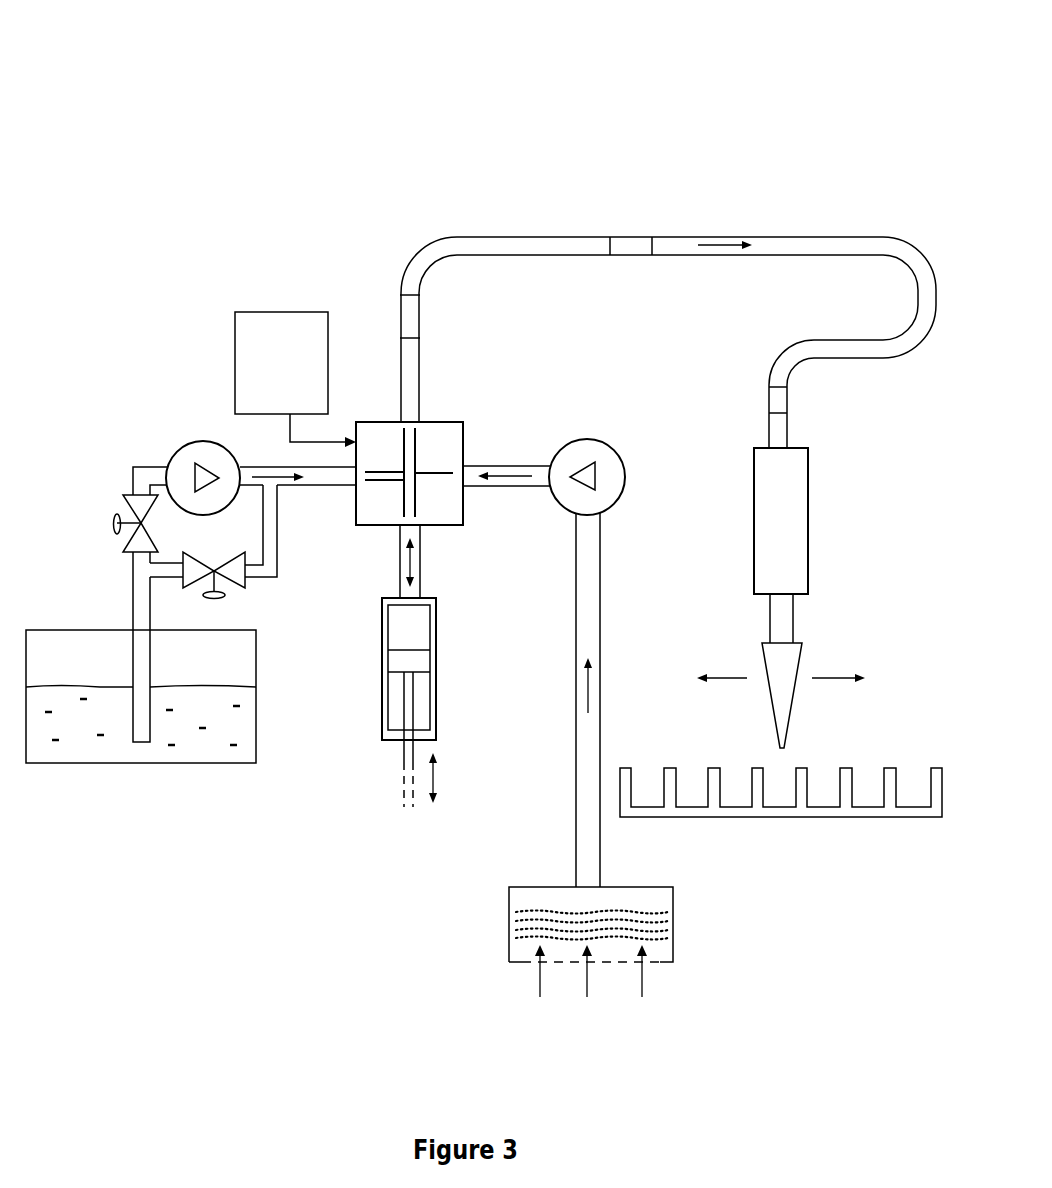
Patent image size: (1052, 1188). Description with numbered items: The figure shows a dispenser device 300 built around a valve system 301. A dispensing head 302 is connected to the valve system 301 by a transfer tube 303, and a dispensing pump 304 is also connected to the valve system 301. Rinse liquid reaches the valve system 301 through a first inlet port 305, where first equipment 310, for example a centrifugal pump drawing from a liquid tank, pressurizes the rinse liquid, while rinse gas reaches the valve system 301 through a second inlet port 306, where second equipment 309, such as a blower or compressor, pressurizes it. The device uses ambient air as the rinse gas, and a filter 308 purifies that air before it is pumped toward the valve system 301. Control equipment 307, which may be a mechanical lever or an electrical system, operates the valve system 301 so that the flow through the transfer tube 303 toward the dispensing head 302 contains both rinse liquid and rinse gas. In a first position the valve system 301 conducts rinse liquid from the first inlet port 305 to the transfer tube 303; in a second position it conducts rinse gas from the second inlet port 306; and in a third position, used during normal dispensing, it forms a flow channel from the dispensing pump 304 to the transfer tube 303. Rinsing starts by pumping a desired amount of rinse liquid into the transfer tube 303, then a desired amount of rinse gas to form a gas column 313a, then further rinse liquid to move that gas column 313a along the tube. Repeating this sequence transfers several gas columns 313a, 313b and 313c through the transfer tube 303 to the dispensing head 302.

The dispenser device 300 is at (246, 112).
The valve system 301 is at (437, 422).
The dispensing head 302 is at (808, 536).
The transfer tube 303 is at (813, 237).
The dispensing pump 304 is at (436, 662).
The first inlet port 305 is at (345, 488).
The second inlet port 306 is at (472, 487).
The control equipment 307 is at (295, 379).
The filter 308 is at (509, 910).
The second equipment 309 is at (627, 477).
The first equipment 310 is at (210, 441).
The gas column 313a is at (779, 395).
The gas column 313b is at (630, 243).
The gas column 313c is at (406, 318).